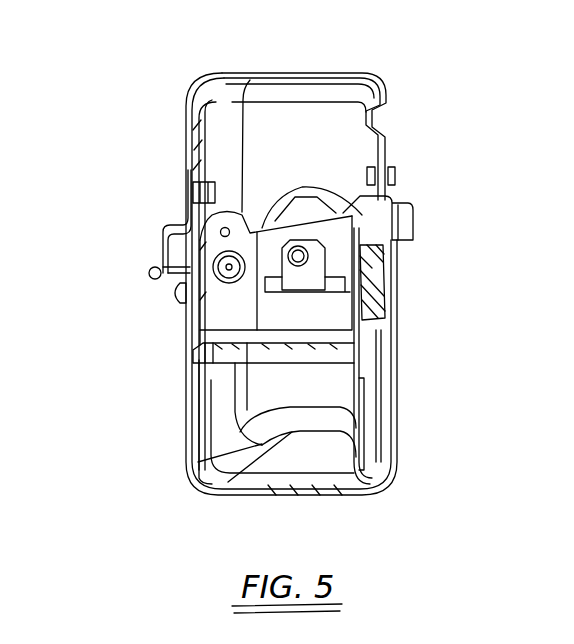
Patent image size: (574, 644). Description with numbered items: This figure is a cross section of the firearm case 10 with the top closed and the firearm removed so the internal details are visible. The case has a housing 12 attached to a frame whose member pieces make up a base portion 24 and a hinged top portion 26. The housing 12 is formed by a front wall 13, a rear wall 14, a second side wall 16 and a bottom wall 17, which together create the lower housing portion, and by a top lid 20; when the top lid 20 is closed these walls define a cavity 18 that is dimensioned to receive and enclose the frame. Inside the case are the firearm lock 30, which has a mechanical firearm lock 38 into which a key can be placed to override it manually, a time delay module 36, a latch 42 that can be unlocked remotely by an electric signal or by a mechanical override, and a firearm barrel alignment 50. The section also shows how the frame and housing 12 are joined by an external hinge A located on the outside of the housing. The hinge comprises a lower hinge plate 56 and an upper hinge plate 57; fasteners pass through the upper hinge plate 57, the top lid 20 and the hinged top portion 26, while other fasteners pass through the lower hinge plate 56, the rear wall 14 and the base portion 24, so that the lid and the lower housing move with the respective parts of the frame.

The firearm case 10 is at (186, 72).
The housing 12 is at (393, 262).
The front wall 13 is at (398, 333).
The rear wall 14 is at (190, 388).
The second side wall 16 is at (333, 380).
The bottom wall 17 is at (257, 497).
The cavity 18 is at (303, 450).
The top lid 20 is at (378, 82).
The base portion 24 is at (258, 355).
The hinged top portion 26 is at (204, 127).
The firearm lock 30 is at (243, 318).
The time delay module 36 is at (366, 417).
The mechanical firearm lock 38 is at (247, 252).
The latch 42 is at (378, 296).
The firearm barrel alignment 50 is at (317, 240).
The lower hinge plate 56 is at (172, 294).
The upper hinge plate 57 is at (163, 230).
The external hinge A is at (160, 248).